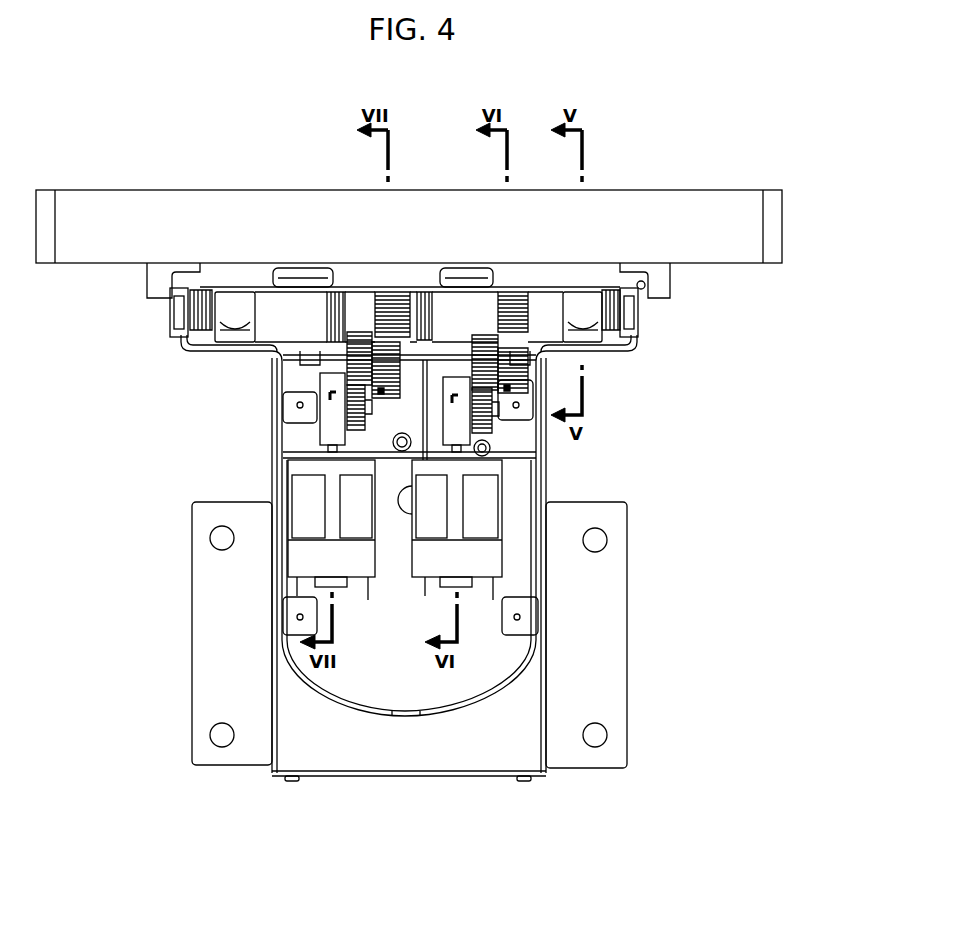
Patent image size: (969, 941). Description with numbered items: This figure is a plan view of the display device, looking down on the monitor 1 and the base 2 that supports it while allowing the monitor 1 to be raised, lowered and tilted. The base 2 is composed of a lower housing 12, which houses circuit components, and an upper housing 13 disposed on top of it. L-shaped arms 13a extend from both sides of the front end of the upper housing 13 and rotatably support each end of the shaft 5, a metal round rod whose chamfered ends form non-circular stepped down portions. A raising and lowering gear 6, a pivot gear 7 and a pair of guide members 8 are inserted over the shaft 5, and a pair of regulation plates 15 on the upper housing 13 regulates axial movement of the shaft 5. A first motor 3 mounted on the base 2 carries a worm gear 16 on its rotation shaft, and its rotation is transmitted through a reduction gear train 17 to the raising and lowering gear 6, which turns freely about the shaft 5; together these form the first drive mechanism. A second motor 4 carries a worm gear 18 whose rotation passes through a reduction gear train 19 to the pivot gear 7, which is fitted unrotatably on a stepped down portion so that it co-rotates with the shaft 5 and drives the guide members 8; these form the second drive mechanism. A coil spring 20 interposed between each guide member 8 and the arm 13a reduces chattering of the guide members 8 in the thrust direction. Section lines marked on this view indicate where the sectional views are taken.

The monitor 1 is at (744, 192).
The base 2 is at (409, 620).
The first motor 3 is at (310, 565).
The second motor 4 is at (470, 565).
The shaft 5 is at (275, 305).
The raising and lowering gear 6 is at (385, 300).
The pivot gear 7 is at (512, 300).
The guide member 8 is at (232, 312).
The lower housing 12 is at (485, 757).
The upper housing 13 is at (430, 716).
The arm 13a is at (178, 300).
The regulation plate 15 is at (332, 348).
The worm gear 16 is at (333, 430).
The reduction gear train 17 is at (355, 360).
The worm gear 18 is at (465, 440).
The reduction gear train 19 is at (495, 398).
The coil spring 20 is at (200, 318).